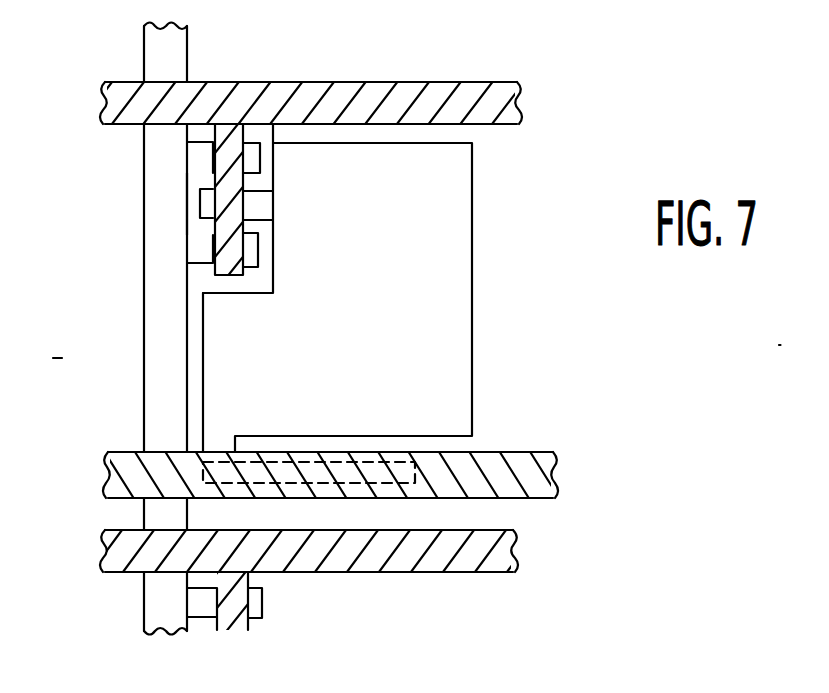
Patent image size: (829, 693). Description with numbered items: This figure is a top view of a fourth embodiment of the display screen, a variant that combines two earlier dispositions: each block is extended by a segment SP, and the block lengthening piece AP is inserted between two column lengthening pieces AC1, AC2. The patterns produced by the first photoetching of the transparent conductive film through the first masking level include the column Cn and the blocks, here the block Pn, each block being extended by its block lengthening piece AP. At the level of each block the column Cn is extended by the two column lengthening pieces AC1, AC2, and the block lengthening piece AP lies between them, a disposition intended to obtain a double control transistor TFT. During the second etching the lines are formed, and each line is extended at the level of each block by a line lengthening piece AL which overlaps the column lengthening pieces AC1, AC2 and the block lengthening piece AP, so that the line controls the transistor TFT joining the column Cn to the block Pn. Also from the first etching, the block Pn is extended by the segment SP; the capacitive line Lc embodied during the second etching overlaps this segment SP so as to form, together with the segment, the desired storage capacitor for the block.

The column Cn is at (148, 45).
The row scanning line n Ln is at (122, 121).
The capacitor line Lc is at (117, 462).
The thin film transistor TFT is at (288, 232).
The block lengthening piece AP is at (207, 200).
The column lengthening piece AC1 is at (250, 153).
The column lengthening piece AC2 is at (252, 254).
The line lengthening piece AL is at (233, 263).
The pixel electrode Pn is at (420, 397).
The segment SP is at (332, 462).